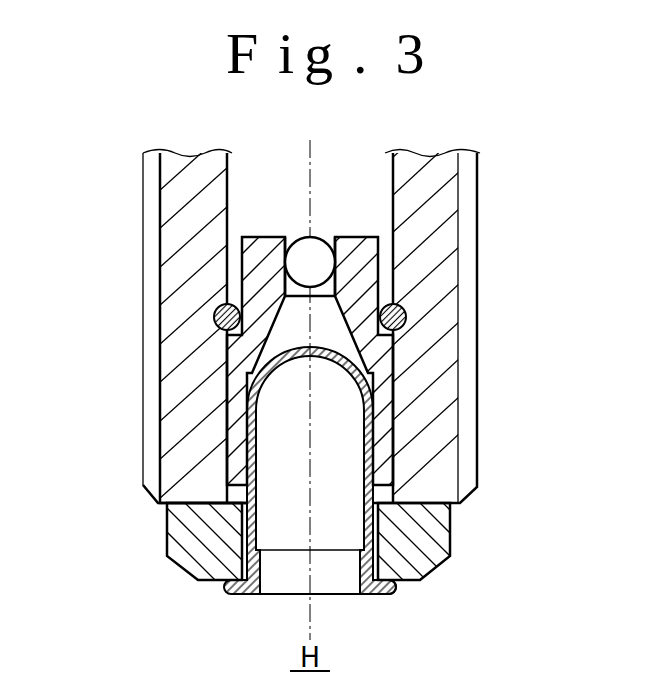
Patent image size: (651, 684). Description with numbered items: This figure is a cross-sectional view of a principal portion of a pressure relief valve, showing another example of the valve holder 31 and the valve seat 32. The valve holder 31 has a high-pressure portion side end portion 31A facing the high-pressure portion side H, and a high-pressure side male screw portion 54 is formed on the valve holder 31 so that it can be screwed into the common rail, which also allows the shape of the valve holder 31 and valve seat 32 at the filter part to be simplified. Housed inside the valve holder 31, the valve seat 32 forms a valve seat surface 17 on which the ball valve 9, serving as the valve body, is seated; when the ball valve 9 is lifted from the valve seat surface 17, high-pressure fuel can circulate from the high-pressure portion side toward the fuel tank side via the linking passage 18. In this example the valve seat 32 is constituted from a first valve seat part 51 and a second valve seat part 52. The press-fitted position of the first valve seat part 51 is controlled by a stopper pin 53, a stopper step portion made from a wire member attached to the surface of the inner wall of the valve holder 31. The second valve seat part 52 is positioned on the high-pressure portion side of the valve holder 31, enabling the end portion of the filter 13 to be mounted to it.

The valve holder 31 is at (185, 231).
The high-pressure portion side end portion 31A is at (128, 460).
The high-pressure side male screw portion 54 is at (150, 357).
The valve seat 32 is at (563, 365).
The valve seat surface 17 is at (287, 251).
The linking passage 18 is at (315, 299).
The ball valve 9 is at (319, 239).
The stopper pin 53 is at (406, 318).
The second valve seat part 52 is at (447, 530).
The first valve seat part 51 is at (386, 398).
The filter 13 is at (358, 596).